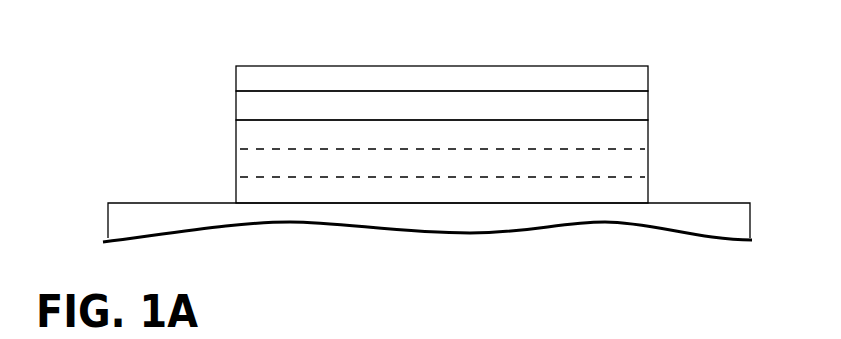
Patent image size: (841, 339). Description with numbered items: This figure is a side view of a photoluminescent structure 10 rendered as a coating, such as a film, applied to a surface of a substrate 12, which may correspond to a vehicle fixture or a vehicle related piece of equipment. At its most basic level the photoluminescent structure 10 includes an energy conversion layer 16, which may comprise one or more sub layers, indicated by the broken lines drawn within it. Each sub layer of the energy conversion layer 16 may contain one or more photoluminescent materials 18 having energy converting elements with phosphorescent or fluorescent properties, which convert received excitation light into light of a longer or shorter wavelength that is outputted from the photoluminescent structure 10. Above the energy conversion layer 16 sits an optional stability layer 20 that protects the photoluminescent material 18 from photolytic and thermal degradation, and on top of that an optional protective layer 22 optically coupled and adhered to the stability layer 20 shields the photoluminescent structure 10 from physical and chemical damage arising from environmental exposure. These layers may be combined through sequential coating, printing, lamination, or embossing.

The photoluminescent structure 10 is at (587, 40).
The substrate 12 is at (695, 202).
The energy conversion layer 16 is at (236, 160).
The photoluminescent material 18 is at (575, 158).
The stability layer 20 is at (236, 106).
The protective layer 22 is at (327, 66).